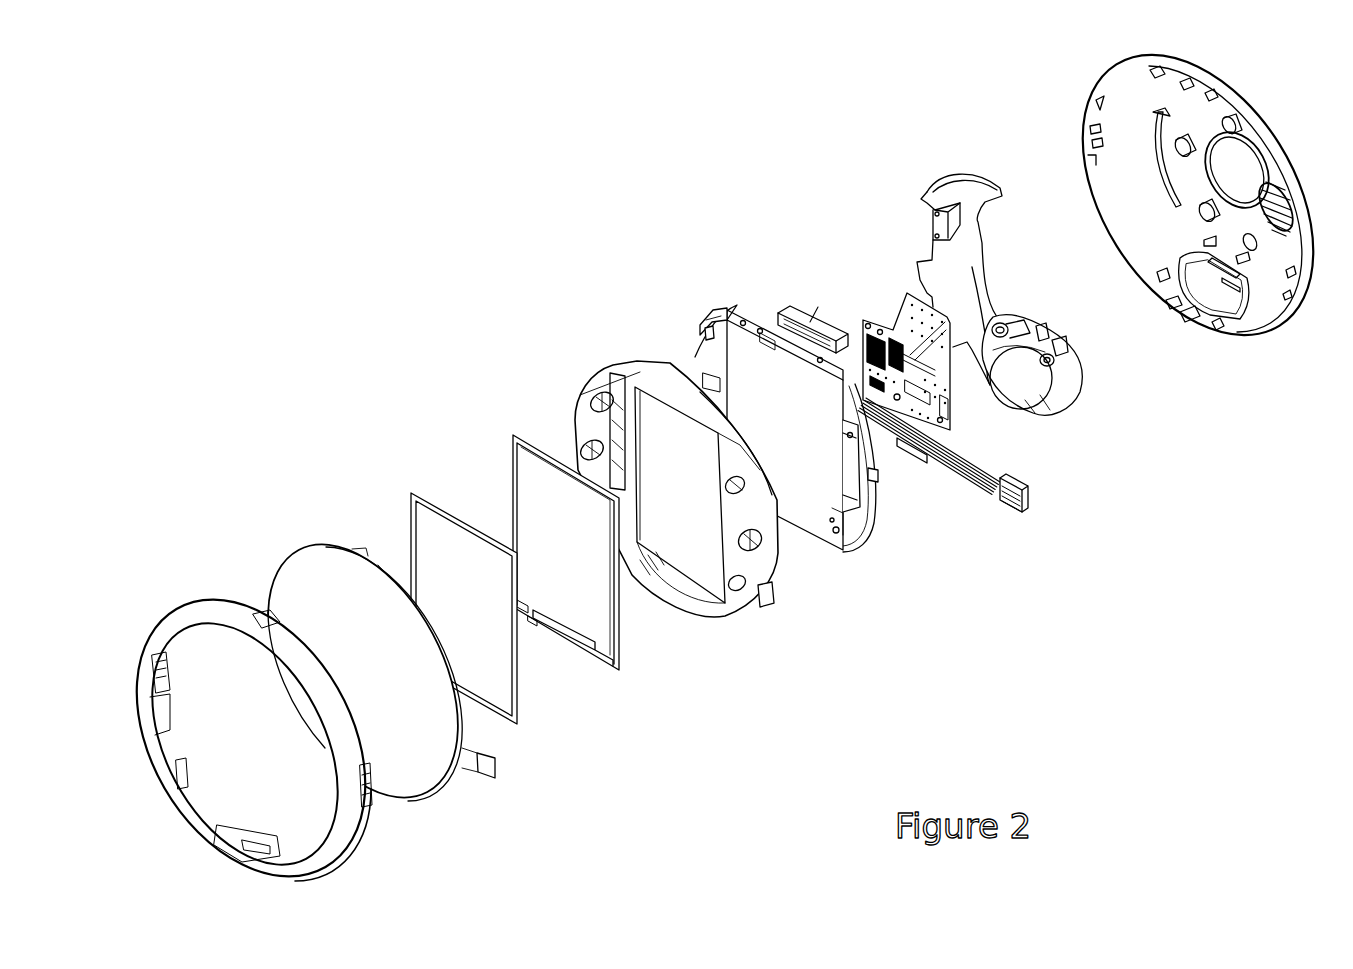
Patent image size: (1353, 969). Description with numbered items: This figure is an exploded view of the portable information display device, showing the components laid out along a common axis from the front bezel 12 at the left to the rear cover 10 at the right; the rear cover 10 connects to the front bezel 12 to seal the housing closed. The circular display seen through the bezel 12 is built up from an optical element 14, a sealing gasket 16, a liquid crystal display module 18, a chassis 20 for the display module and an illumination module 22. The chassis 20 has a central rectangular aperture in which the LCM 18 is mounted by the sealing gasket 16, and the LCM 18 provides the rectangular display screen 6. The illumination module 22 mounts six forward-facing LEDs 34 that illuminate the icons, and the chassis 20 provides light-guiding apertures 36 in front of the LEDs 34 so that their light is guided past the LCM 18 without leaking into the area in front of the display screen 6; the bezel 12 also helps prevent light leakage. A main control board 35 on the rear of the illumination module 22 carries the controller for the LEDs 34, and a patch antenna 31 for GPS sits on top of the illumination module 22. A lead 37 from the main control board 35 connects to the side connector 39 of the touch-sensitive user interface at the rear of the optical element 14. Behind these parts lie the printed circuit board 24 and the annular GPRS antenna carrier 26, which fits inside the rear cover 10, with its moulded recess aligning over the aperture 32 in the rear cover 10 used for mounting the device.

The display screen 6 is at (580, 578).
The rear cover 10 is at (1267, 297).
The front bezel 12 is at (193, 612).
The optical element 14 is at (378, 648).
The sealing gasket 16 is at (458, 517).
The liquid crystal display module (LCM) 18 is at (530, 437).
The chassis 20 is at (753, 459).
The illumination module 22 is at (813, 540).
The printed circuit board 24 is at (950, 390).
The GPRS antenna carrier 26 is at (1027, 400).
The patch antenna 31 is at (797, 322).
The aperture 32 is at (1207, 287).
The LEDs 34 is at (712, 334).
The main control board 35 is at (738, 310).
The light-guiding apertures 36 is at (763, 605).
The lead 37 is at (1002, 512).
The side connector 39 is at (480, 776).